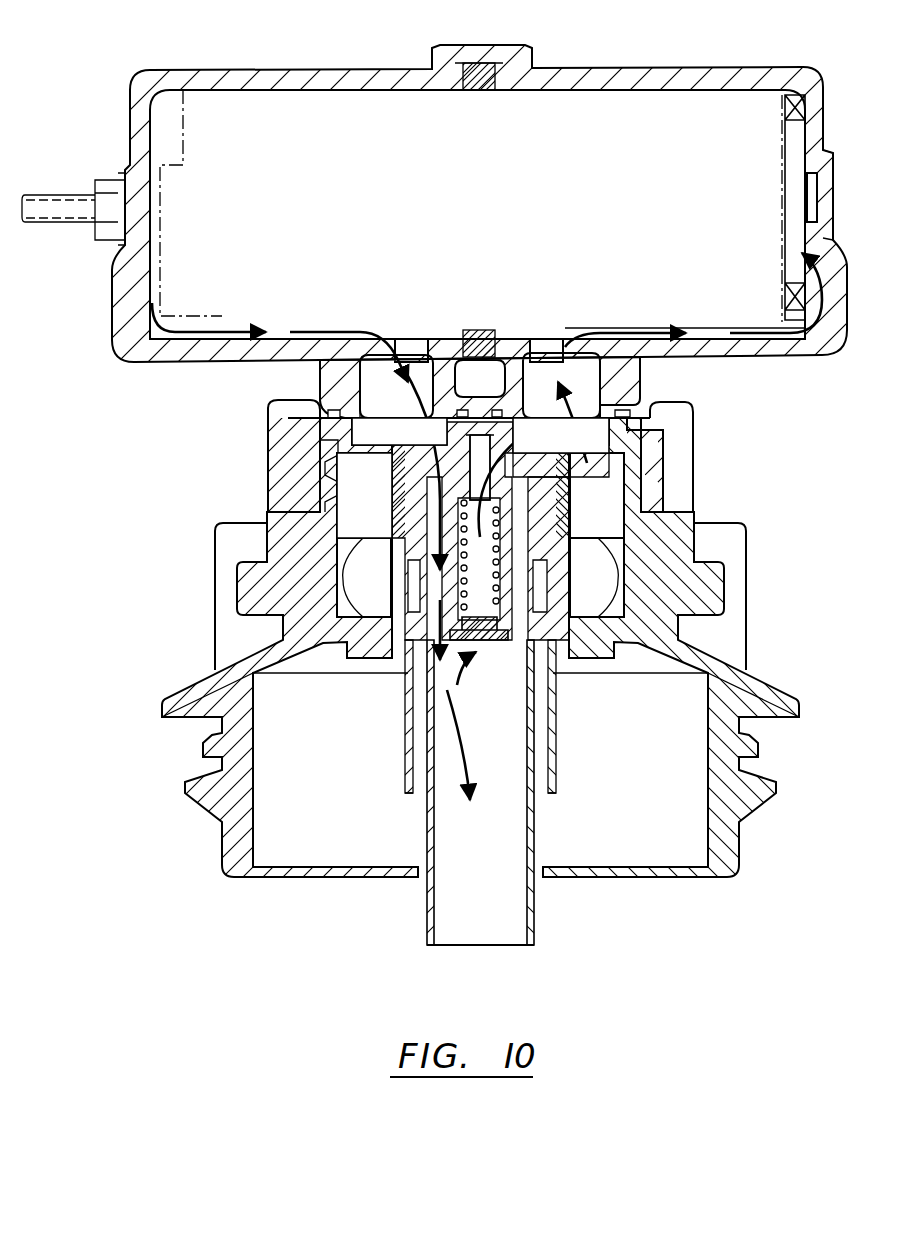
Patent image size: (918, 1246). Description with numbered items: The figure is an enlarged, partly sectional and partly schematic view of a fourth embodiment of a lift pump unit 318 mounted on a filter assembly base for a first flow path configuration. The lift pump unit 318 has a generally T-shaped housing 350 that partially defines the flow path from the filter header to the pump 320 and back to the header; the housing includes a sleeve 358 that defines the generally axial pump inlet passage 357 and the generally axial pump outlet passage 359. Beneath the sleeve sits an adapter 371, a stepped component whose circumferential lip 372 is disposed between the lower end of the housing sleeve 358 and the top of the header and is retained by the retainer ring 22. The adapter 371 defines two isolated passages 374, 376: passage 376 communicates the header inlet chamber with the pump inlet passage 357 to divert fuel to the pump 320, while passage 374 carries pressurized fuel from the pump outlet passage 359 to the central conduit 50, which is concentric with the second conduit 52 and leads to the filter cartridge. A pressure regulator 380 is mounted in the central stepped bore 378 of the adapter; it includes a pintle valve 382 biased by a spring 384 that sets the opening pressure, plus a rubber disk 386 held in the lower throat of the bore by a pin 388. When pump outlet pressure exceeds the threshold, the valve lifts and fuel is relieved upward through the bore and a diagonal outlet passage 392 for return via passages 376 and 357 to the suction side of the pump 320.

The lift pump unit 318 is at (198, 44).
The pump 320 is at (348, 208).
The housing 350 is at (772, 358).
The pump outlet passage 359 is at (412, 340).
The pump inlet passage 357 is at (543, 345).
The housing sleeve 358 is at (322, 385).
The adapter passage 376 is at (587, 430).
The adapter 371 is at (298, 425).
The circumferential lip 372 is at (655, 418).
The retainer ring 22 is at (695, 437).
The adapter passage 374 is at (380, 432).
The central stepped bore 378 is at (487, 530).
The pressure regulator 380 is at (478, 570).
The diagonal outlet passage 392 is at (500, 463).
The pintle valve 382 is at (600, 603).
The spring 384 is at (438, 678).
The rubber disk 386 is at (485, 660).
The pin 388 is at (505, 645).
The second sleeve or conduit 52 is at (556, 770).
The conduit or sleeve 50 is at (535, 922).